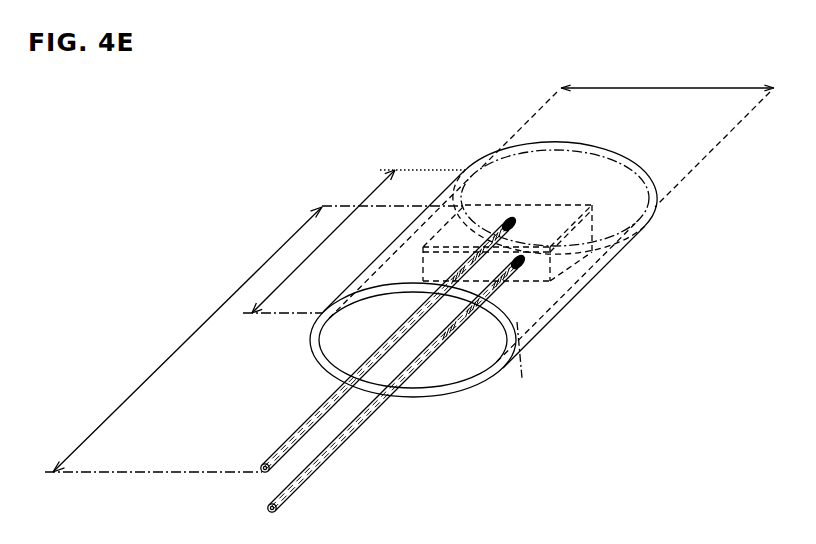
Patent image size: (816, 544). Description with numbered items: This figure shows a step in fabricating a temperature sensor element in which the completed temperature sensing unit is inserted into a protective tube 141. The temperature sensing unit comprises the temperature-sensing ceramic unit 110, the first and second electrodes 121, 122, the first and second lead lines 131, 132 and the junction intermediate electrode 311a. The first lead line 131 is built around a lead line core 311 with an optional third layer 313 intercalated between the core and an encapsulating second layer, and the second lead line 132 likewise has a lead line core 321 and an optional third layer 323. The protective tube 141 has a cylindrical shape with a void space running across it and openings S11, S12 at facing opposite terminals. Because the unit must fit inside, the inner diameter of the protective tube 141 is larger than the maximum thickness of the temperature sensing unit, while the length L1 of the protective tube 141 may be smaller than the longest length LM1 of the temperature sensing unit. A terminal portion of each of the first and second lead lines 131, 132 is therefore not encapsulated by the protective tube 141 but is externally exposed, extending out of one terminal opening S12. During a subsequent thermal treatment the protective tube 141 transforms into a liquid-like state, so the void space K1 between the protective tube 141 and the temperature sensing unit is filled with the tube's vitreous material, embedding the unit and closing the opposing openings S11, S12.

The temperature-sensing ceramic unit 110 is at (578, 267).
The first electrode 121 is at (602, 242).
The second electrode 122 is at (565, 283).
The protective tube 141 is at (553, 300).
The first lead line 131 is at (356, 348).
The lead line core 311 is at (322, 405).
The third layer 313 is at (306, 424).
The junction intermediate electrode 311a is at (513, 226).
The second lead line 132 is at (393, 387).
The lead line core 321 is at (336, 447).
The third layer 323 is at (322, 468).
The opening S11 is at (613, 152).
The terminal opening S12 is at (482, 388).
The void space K1 is at (521, 268).
The length of the protective tube L1 is at (354, 241).
The longest length of the temperature sensing unit LM1 is at (255, 339).